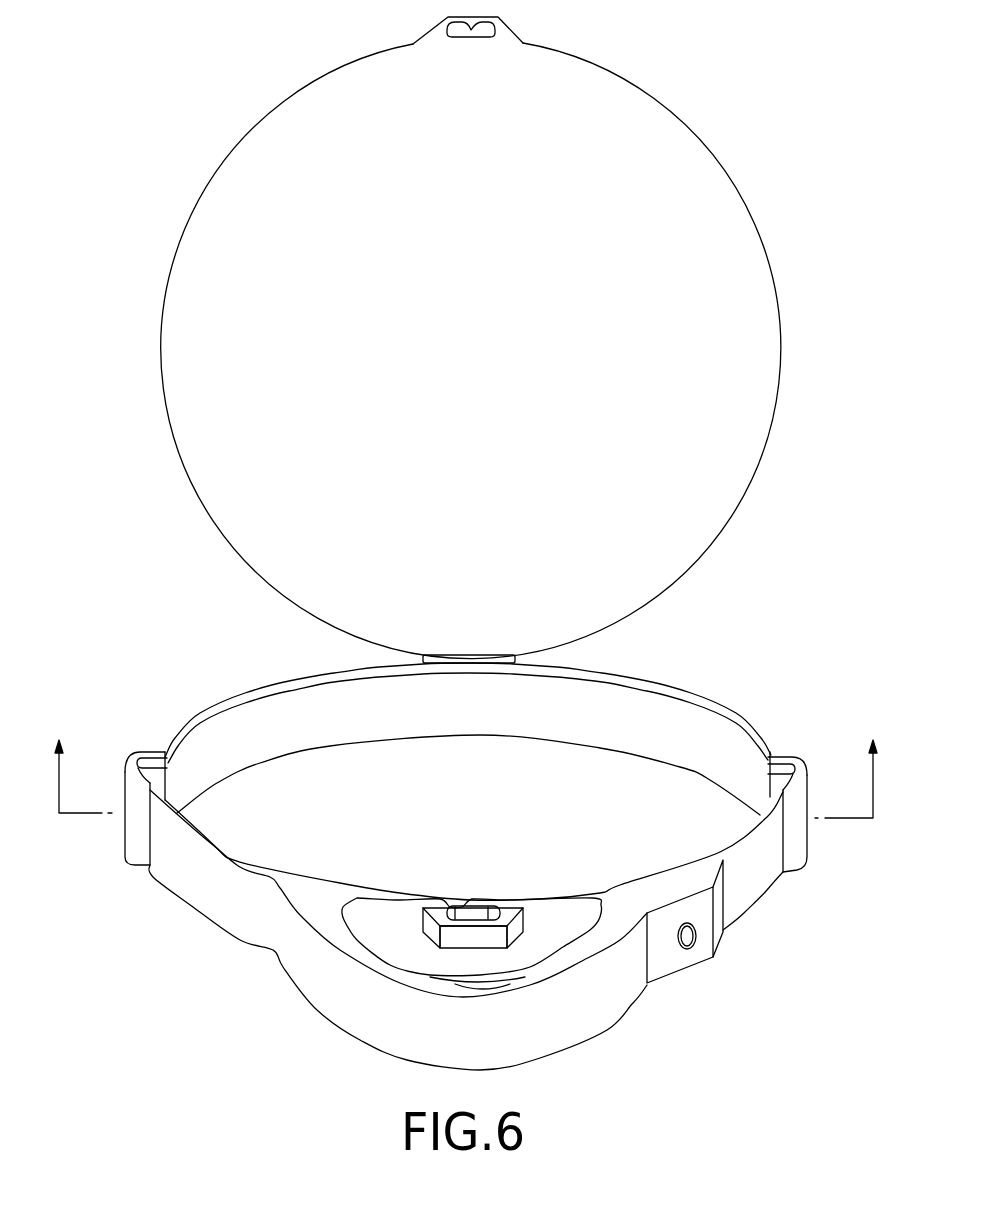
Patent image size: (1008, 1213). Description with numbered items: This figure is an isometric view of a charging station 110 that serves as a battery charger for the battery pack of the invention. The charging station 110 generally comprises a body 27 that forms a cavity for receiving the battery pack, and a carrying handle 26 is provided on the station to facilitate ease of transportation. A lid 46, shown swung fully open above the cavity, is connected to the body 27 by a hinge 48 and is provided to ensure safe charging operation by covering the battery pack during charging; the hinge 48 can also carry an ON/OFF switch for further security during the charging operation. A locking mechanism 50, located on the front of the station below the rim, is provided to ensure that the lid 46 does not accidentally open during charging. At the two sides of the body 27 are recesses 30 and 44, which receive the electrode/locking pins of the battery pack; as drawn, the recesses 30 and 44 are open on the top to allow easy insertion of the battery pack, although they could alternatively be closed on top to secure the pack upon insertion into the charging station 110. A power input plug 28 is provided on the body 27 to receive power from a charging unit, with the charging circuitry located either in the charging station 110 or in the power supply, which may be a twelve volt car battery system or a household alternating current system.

The charging station 110 is at (796, 521).
The lid 46 is at (660, 130).
The hinge 48 is at (440, 652).
The body 27 is at (215, 745).
The recess 30 is at (148, 758).
The recess 44 is at (800, 760).
The carrying handle 26 is at (547, 1032).
The locking mechanism 50 is at (463, 940).
The power input plug 28 is at (690, 950).